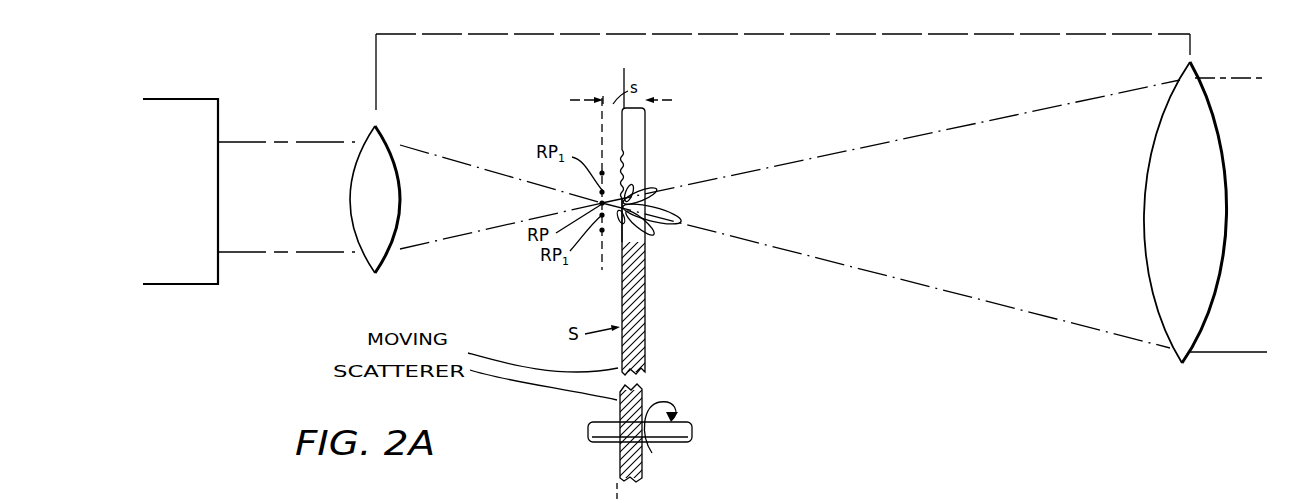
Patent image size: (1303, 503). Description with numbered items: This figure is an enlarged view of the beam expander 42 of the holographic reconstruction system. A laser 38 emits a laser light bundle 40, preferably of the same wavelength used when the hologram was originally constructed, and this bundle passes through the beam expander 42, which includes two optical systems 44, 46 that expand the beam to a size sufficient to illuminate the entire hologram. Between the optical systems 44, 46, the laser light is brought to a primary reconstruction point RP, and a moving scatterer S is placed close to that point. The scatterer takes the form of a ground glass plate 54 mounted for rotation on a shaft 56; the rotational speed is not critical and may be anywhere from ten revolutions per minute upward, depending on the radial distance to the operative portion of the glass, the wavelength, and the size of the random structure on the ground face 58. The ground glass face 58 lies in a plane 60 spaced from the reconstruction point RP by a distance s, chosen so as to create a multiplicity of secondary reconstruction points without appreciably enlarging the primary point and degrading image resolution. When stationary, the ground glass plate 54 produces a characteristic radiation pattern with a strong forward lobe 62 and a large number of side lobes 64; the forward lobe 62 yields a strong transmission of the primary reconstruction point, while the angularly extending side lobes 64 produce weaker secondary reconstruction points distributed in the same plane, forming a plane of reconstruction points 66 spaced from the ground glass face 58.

The laser 38 is at (212, 78).
The laser light bundle 40 is at (315, 143).
The beam expander 42 is at (906, 34).
The optical system 44 is at (376, 148).
The optical system 46 is at (1185, 328).
The ground glass plate 54 is at (620, 357).
The shaft 56 is at (654, 419).
The ground glass face 58 is at (621, 236).
The plane 60 is at (624, 80).
The forward lobe 62 is at (672, 222).
The side lobes 64 is at (640, 224).
The plane of reconstruction points 66 is at (603, 118).